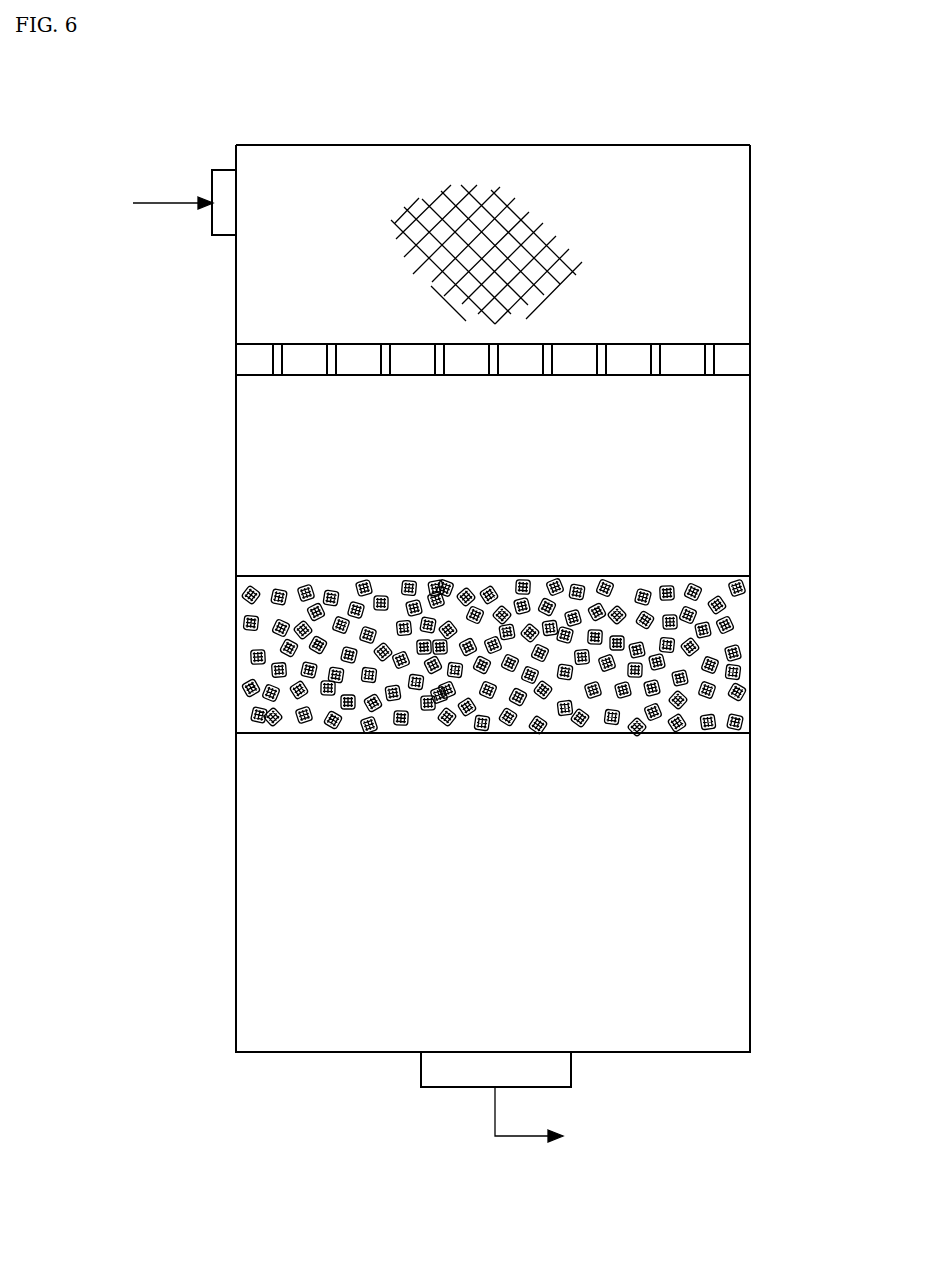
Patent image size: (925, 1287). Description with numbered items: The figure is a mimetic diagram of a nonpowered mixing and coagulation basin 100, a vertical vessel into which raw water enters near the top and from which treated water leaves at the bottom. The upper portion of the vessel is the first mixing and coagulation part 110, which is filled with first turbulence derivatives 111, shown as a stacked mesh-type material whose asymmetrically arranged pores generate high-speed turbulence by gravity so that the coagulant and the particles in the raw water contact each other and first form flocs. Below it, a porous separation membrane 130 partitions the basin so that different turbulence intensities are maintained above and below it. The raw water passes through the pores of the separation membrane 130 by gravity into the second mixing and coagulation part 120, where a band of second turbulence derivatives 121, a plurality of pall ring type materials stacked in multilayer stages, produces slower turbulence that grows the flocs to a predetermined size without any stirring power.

The nonpowered mixing and coagulation basin 100 is at (167, 118).
The first mixing and coagulation part 110 is at (770, 145).
The first turbulence derivatives 111 is at (480, 190).
The separation membrane 130 is at (770, 346).
The second mixing and coagulation part 120 is at (770, 1047).
The second turbulence derivatives 121 is at (255, 657).